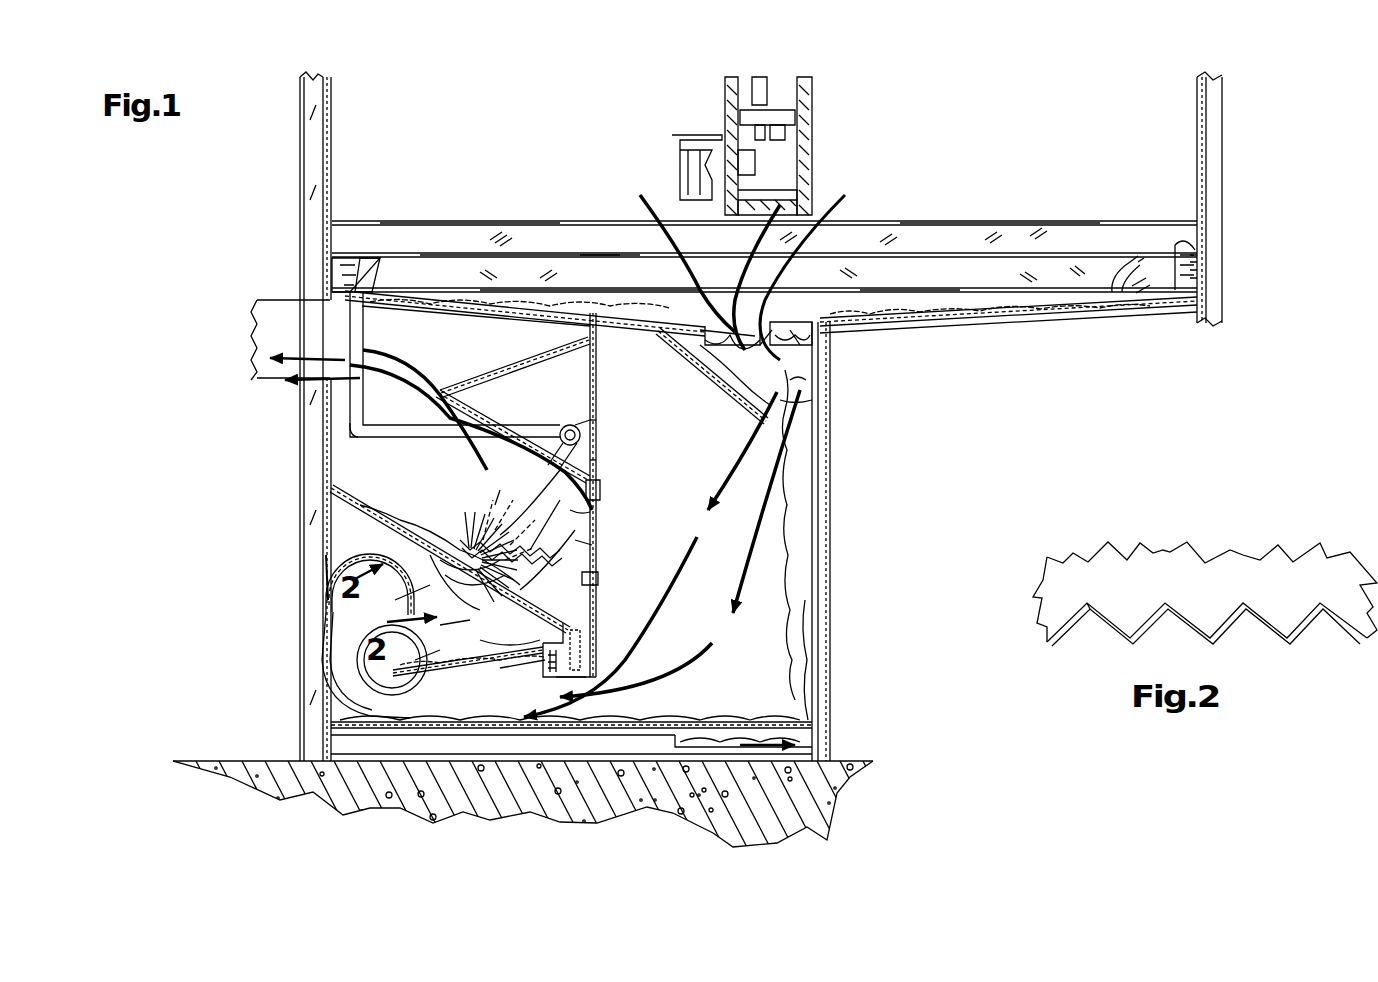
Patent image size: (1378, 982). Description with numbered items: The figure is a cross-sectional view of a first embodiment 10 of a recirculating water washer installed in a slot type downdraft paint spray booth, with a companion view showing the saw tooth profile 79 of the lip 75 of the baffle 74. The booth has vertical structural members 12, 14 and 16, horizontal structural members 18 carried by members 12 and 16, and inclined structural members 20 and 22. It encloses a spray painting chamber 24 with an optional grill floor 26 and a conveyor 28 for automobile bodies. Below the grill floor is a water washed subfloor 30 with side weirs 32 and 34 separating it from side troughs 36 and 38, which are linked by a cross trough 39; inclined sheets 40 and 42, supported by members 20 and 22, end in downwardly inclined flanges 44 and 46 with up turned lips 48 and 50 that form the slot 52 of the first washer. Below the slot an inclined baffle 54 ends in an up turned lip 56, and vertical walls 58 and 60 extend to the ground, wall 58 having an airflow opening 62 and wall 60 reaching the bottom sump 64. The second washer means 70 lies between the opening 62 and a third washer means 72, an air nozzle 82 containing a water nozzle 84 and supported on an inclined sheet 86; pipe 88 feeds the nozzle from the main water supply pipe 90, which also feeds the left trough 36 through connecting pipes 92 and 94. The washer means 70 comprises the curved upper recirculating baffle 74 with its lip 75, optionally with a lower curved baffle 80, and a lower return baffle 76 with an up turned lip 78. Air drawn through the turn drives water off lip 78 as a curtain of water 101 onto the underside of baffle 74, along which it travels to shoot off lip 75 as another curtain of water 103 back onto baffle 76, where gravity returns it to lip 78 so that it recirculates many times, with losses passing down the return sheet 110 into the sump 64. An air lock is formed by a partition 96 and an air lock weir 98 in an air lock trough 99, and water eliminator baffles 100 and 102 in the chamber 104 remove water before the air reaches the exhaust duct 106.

In FIG. 1, the first embodiment 10 is at (262, 588).
In FIG. 1, the vertical structural member 12 is at (312, 436).
In FIG. 1, the vertical structural member 14 is at (818, 590).
In FIG. 1, the vertical structural member 16 is at (1210, 268).
In FIG. 1, the horizontal structural member 18 is at (1190, 246).
In FIG. 1, the inclined structural member 20 is at (460, 300).
In FIG. 1, the inclined structural member 22 is at (1020, 315).
In FIG. 1, the spray painting chamber 24 is at (948, 146).
In FIG. 1, the grill floor 26 is at (1028, 222).
In FIG. 1, the conveyor 28 is at (800, 125).
In FIG. 1, the subfloor 30 is at (570, 300).
In FIG. 1, the side weir 32 is at (385, 262).
In FIG. 1, the side weir 34 is at (1131, 262).
In FIG. 1, the left side trough 36 is at (345, 272).
In FIG. 1, the right side trough 38 is at (1202, 256).
In FIG. 1, the cross trough 39 is at (602, 276).
In FIG. 1, the sheet 40 is at (505, 302).
In FIG. 1, the sheet 42 is at (898, 312).
In FIG. 1, the flange 44 is at (660, 280).
In FIG. 1, the flange 46 is at (810, 325).
In FIG. 1, the up turned lip 48 is at (730, 339).
In FIG. 1, the up turned lip 50 is at (793, 347).
In FIG. 1, the slot 52 is at (775, 330).
In FIG. 1, the inclined baffle 54 is at (730, 377).
In FIG. 1, the up turned lip 56 is at (800, 397).
In FIG. 1, the vertical wall 58 is at (592, 496).
In FIG. 1, the vertical wall 60 is at (779, 660).
In FIG. 1, the airflow opening 62 is at (592, 690).
In FIG. 1, the bottom sump 64 is at (790, 745).
In FIG. 1, the second recirculating washer means 70 is at (328, 565).
In FIG. 1, the third washer means 72 is at (462, 548).
In FIG. 1, the first recirculating baffle 74 is at (338, 560).
In FIG. 1, the downstream lip 75 is at (405, 588).
In FIG. 2, the downstream lip 75 is at (1188, 592).
In FIG. 1, the second recirculating baffle 76 is at (492, 640).
In FIG. 1, the up turned lip 78 is at (420, 610).
In FIG. 2, the saw tooth profile 79 is at (1107, 613).
In FIG. 1, the lower curved baffle 80 is at (345, 707).
In FIG. 1, the air nozzle 82 is at (580, 545).
In FIG. 1, the water nozzle 84 is at (570, 515).
In FIG. 1, the inclined sheet 86 is at (590, 578).
In FIG. 1, the pipe 88 is at (592, 450).
In FIG. 1, the main water supply pipe 90 is at (580, 430).
In FIG. 1, the connecting pipe 92 is at (398, 438).
In FIG. 1, the connecting pipe 94 is at (365, 332).
In FIG. 1, the partition 96 is at (540, 660).
In FIG. 1, the air lock weir 98 is at (510, 672).
In FIG. 1, the air lock trough 99 is at (565, 690).
In FIG. 1, the water eliminator baffle 100 is at (487, 423).
In FIG. 1, the curtain of water 101 is at (405, 612).
In FIG. 1, the water eliminator baffle 102 is at (618, 495).
In FIG. 1, the curtain of water 103 is at (470, 625).
In FIG. 1, the chamber 104 is at (437, 365).
In FIG. 1, the exhaust duct 106 is at (262, 362).
In FIG. 1, the return sheet 110 is at (430, 650).